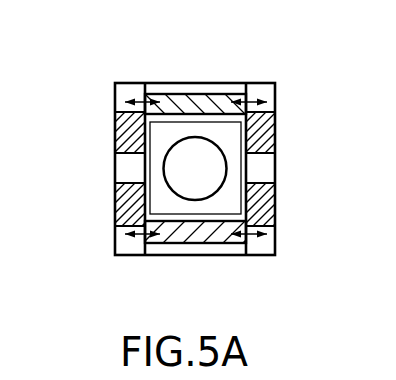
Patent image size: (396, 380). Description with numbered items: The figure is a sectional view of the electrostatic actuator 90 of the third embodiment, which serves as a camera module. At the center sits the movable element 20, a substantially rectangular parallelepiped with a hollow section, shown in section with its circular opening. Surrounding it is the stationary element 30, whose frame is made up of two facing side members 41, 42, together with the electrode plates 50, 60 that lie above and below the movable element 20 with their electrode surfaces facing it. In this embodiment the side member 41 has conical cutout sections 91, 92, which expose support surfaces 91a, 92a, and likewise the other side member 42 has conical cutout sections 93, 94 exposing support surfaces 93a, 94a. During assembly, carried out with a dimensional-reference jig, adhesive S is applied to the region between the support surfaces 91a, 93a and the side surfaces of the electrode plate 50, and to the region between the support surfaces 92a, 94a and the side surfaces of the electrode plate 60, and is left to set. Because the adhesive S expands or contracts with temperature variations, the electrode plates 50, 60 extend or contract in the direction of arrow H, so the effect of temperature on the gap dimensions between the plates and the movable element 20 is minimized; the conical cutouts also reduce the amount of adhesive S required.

The movable element 20 is at (157, 157).
The stationary element 30 is at (276, 86).
The side member 41 is at (115, 195).
The side member 42 is at (276, 137).
The electrode plate 50 is at (193, 91).
The electrode plate 60 is at (205, 244).
The electrostatic actuator 90 is at (288, 195).
The conical cutout section 91 is at (126, 101).
The support surface 91a is at (121, 105).
The conical cutout section 92 is at (127, 247).
The support surface 92a is at (120, 235).
The conical cutout section 93 is at (262, 92).
The support surface 93a is at (276, 103).
The conical cutout section 94 is at (272, 246).
The support surface 94a is at (278, 232).
The arrow direction H is at (127, 101).
The adhesive S is at (141, 95).